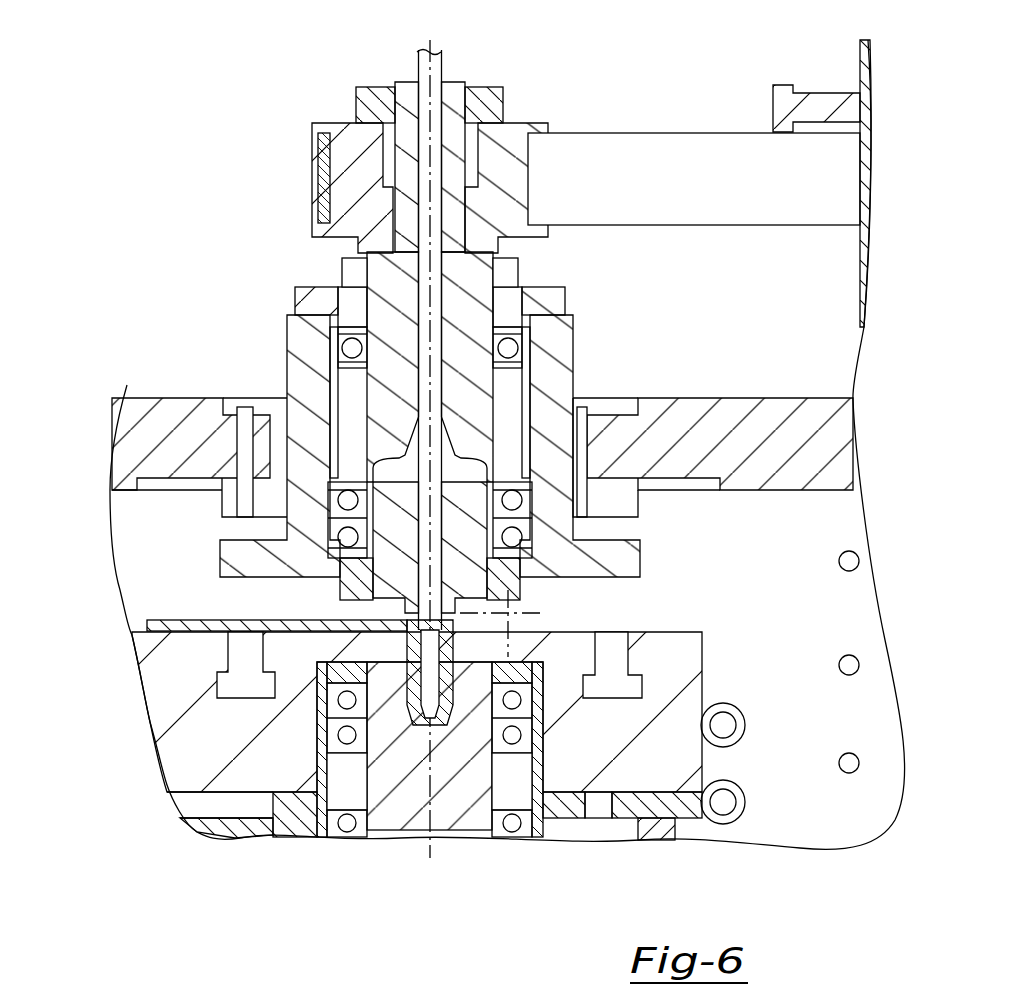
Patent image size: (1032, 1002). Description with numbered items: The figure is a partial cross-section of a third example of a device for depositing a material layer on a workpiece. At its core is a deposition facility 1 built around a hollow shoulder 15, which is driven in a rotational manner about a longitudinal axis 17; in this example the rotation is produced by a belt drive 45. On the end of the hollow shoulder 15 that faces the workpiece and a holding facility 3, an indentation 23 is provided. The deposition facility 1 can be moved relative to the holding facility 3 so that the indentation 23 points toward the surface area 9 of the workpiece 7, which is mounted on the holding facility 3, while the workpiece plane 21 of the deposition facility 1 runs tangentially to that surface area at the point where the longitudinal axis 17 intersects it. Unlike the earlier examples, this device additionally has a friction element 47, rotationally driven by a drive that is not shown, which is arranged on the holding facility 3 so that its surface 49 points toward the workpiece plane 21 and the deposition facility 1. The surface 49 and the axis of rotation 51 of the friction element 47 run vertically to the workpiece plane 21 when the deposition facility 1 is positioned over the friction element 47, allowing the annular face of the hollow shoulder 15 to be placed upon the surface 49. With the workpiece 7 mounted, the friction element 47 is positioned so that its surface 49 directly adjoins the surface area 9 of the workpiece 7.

The deposition facility 1 is at (238, 241).
The holding facility 3 is at (595, 757).
The workpiece 7 is at (227, 633).
The surface area 9 is at (158, 621).
The hollow shoulder 15 is at (457, 543).
The longitudinal axis 17 is at (418, 41).
The workpiece plane 21 is at (543, 613).
The indentation 23 is at (410, 618).
The belt drive 45 is at (712, 201).
The friction element 47 is at (413, 678).
The surface 49 is at (460, 615).
The axis of rotation 51 is at (432, 840).